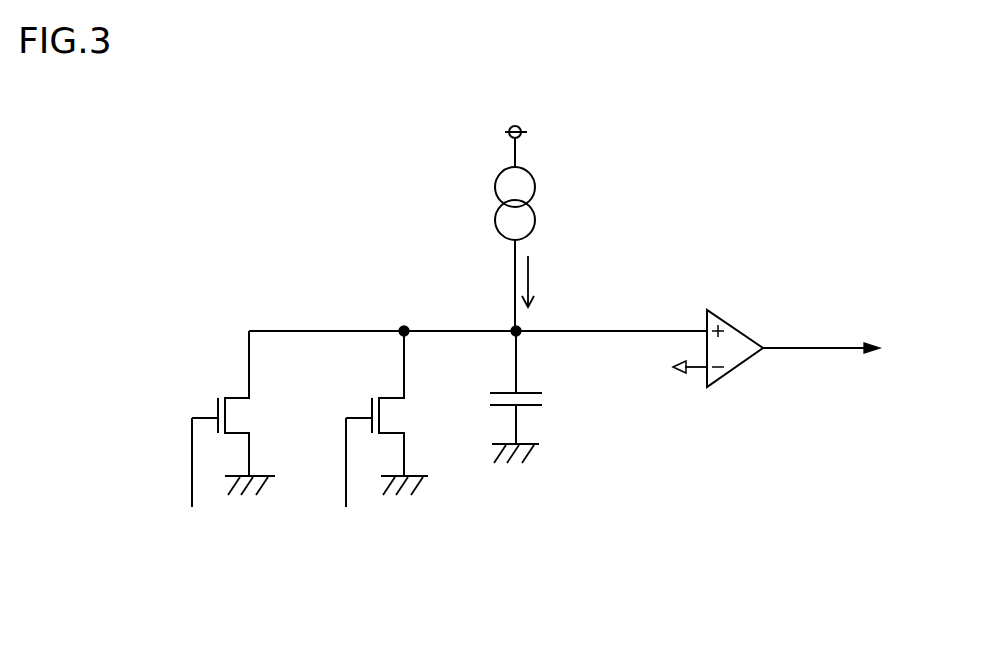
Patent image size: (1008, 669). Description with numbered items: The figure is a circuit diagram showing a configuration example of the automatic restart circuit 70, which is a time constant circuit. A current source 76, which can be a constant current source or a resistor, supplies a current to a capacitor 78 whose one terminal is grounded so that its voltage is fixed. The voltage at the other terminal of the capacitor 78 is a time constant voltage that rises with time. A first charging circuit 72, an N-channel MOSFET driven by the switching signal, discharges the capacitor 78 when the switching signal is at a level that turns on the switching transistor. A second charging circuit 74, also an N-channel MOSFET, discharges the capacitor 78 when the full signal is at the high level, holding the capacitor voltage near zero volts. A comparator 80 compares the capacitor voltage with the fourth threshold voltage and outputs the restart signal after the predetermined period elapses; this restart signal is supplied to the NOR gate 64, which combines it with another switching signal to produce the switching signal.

The automatic restart circuit 70 is at (537, 378).
The first charging circuit 72 is at (393, 417).
The second charging circuit 74 is at (238, 417).
The current source 76 is at (576, 158).
The capacitor 78 is at (538, 398).
The comparator 80 is at (720, 317).
The NOR gate 64 is at (841, 349).